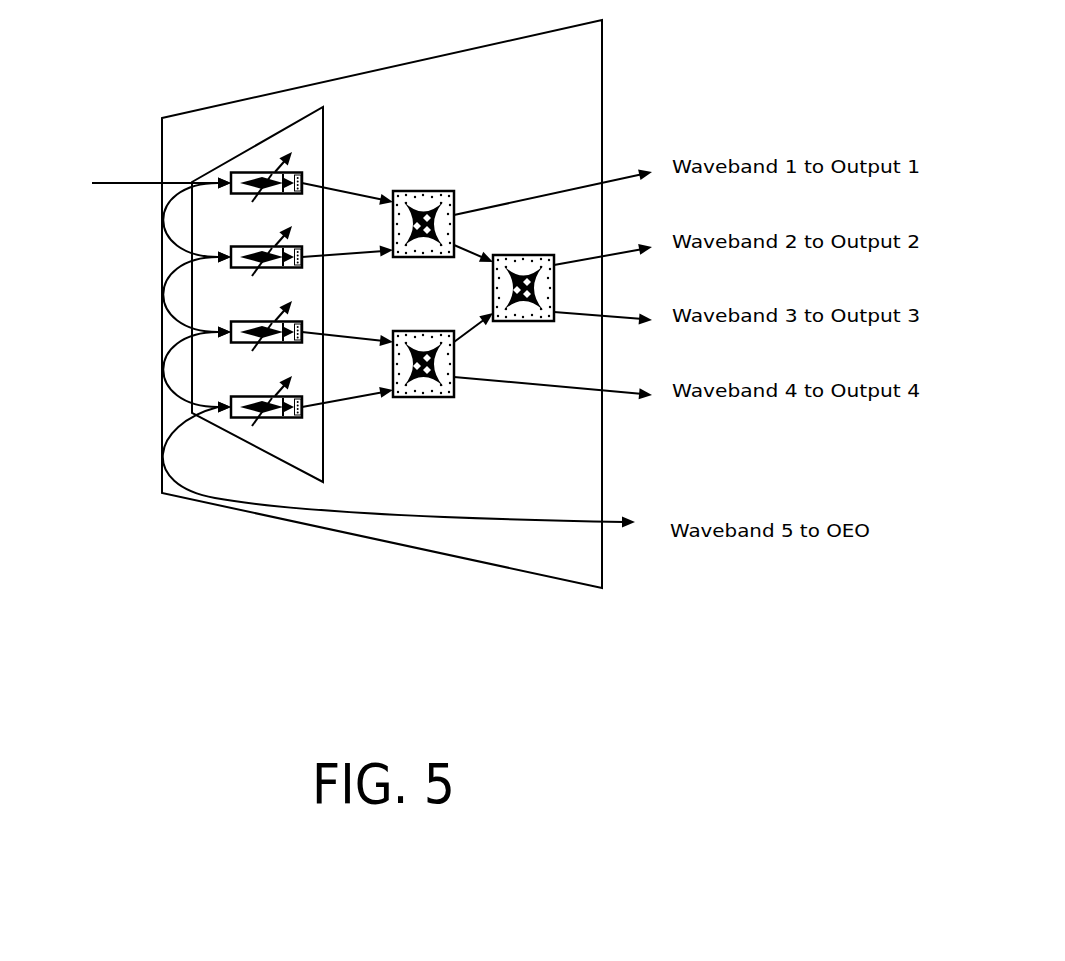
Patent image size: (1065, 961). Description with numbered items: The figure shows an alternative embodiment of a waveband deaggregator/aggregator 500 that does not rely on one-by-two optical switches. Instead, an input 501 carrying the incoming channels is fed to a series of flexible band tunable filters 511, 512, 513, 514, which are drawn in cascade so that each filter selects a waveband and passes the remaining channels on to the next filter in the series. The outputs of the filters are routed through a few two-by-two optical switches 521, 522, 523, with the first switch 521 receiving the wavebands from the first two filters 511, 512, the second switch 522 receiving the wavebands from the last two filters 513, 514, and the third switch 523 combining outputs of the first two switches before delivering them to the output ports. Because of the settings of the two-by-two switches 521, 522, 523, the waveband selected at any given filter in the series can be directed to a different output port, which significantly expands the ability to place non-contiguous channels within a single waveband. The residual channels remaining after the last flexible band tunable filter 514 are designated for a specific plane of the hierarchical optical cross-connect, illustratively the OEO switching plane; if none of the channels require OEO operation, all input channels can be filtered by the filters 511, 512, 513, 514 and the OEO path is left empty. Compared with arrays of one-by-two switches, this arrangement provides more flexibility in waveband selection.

The waveband deaggregator/aggregator 500 is at (363, 591).
The input fiber 501 is at (131, 172).
The flexible band tunable filter 511 is at (260, 169).
The flexible band tunable filter 512 is at (260, 247).
The flexible band tunable filter 513 is at (260, 321).
The flexible band tunable filter 514 is at (260, 396).
The 2×2 optical switch 521 is at (423, 208).
The 2×2 optical switch 522 is at (423, 379).
The 2×2 optical switch 523 is at (523, 274).